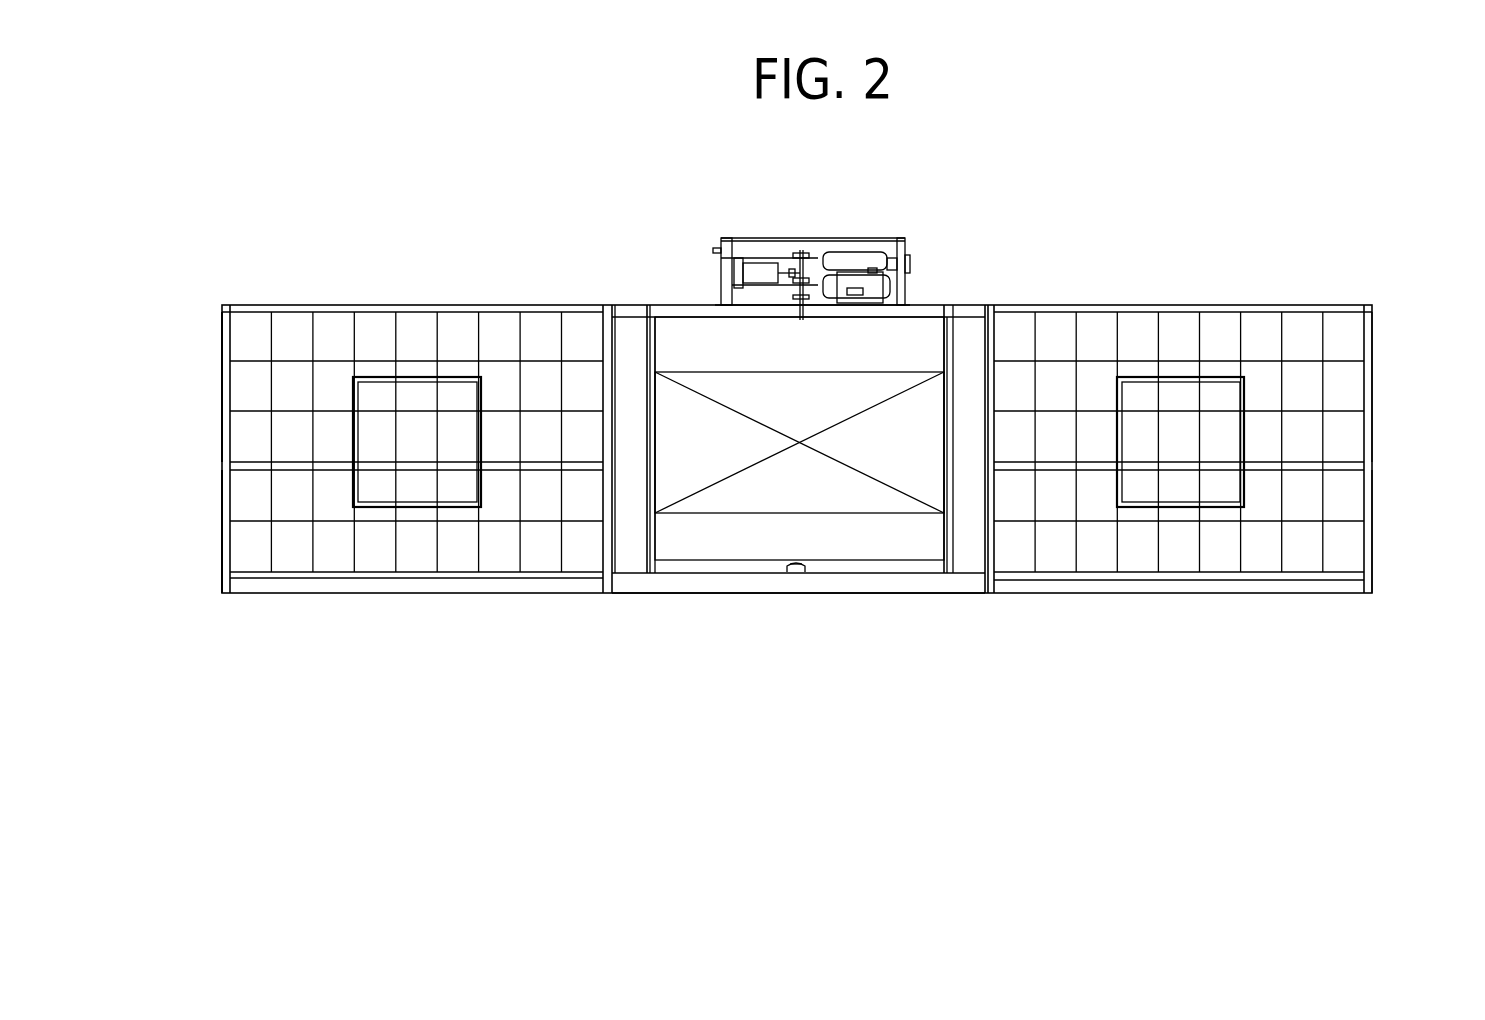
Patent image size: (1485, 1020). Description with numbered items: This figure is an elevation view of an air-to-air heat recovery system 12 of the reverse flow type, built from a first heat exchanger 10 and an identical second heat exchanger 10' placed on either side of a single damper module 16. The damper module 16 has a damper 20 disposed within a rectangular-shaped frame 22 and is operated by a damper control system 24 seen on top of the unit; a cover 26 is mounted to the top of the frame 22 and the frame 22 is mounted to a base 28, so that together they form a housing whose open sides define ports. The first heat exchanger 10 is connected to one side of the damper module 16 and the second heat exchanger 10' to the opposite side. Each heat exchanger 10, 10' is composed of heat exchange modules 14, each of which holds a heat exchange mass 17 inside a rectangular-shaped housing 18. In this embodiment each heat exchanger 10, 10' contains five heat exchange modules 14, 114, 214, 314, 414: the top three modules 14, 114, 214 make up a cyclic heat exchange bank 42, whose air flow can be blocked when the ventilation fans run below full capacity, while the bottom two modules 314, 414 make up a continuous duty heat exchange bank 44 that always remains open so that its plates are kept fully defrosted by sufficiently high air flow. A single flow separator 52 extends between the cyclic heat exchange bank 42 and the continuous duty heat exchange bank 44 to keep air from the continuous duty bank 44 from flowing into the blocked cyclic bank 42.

The first heat exchanger 10 is at (354, 491).
The second heat exchanger 10' is at (1214, 453).
The air-to-air heat recovery system 12 is at (300, 261).
The heat exchange module 14 is at (1342, 332).
The damper module 16 is at (798, 465).
The heat exchange mass 17 is at (1140, 335).
The housing 18 is at (1362, 546).
The damper 20 is at (813, 415).
The frame 22 is at (956, 430).
The damper control system 24 is at (925, 251).
The cover 26 is at (677, 310).
The base 28 is at (897, 592).
The cyclic heat exchange bank 42 is at (194, 378).
The continuous duty heat exchange bank 44 is at (208, 518).
The flow separator 52 is at (1340, 463).
The heat exchange module 114 is at (1355, 381).
The heat exchange module 214 is at (1359, 431).
The heat exchange module 314 is at (1353, 492).
The heat exchange module 414 is at (1338, 566).